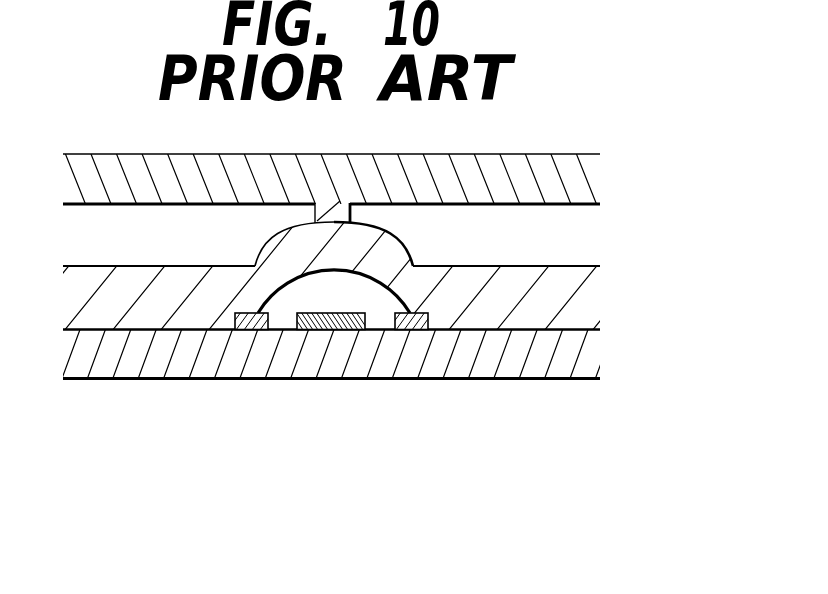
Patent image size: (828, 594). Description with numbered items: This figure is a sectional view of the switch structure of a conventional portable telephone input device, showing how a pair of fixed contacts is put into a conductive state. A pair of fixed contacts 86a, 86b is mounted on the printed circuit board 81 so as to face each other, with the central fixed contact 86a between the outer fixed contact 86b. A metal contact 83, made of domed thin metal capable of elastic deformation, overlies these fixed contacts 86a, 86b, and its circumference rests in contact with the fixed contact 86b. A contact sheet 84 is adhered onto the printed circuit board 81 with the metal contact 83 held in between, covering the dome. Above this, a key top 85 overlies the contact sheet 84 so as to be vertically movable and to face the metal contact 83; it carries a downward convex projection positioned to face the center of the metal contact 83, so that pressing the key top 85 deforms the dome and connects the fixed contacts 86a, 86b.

The printed circuit board 81 is at (573, 357).
The metal contact 83 is at (292, 273).
The contact sheet 84 is at (573, 303).
The key top 85 is at (578, 172).
The fixed contact 86a is at (322, 330).
The fixed contact 86b is at (253, 330).